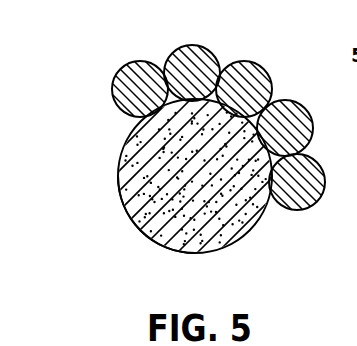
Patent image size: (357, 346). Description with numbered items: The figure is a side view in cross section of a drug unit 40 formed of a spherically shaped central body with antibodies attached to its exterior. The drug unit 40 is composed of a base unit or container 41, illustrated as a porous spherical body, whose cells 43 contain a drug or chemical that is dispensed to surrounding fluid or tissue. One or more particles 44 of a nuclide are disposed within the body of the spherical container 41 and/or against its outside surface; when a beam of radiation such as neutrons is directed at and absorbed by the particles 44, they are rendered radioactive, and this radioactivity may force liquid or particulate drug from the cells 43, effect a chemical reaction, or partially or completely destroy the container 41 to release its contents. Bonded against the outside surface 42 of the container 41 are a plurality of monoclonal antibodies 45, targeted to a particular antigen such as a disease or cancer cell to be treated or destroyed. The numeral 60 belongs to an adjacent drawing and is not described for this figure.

The drug unit 40 is at (108, 50).
The container 41 is at (137, 128).
The outside surface 42 is at (124, 145).
The cells 43 is at (118, 172).
The particles 44 is at (138, 223).
The monoclonal antibodies 45 is at (322, 194).
The adjacent figure element 60 is at (14, 334).